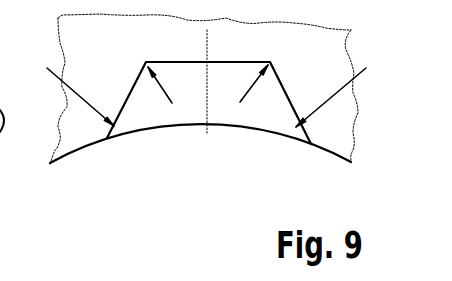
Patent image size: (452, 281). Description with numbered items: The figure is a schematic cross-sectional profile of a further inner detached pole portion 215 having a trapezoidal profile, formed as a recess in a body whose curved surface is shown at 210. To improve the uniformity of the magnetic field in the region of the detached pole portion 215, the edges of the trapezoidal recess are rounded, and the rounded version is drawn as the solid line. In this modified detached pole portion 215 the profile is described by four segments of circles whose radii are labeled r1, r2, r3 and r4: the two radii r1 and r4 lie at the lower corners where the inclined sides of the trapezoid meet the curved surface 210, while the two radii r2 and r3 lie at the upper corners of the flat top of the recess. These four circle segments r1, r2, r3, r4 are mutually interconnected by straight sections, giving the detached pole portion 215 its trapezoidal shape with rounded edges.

The curved outer surface of body 210 is at (351, 158).
The inner detached pole portion 215 is at (219, 112).
The radius r1 is at (79, 92).
The radius r2 is at (158, 97).
The radius r3 is at (251, 98).
The radius r4 is at (333, 100).